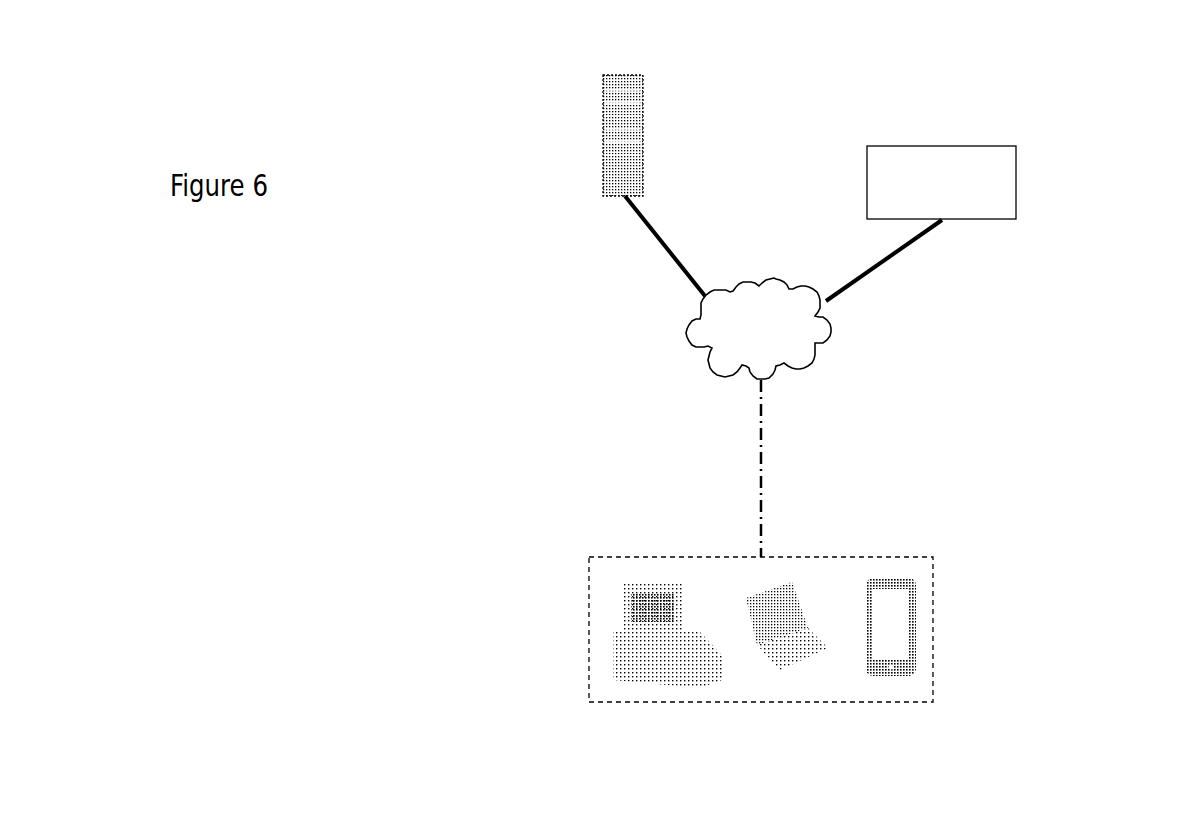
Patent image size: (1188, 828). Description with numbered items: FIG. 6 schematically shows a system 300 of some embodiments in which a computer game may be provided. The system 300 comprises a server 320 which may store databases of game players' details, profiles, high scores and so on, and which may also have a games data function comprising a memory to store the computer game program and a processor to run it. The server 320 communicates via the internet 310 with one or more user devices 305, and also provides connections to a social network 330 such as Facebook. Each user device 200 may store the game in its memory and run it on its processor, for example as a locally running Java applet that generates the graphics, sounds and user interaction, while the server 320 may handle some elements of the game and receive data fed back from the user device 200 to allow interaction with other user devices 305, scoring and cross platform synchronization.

The user device 200 is at (668, 577).
The system 300 is at (1030, 104).
The user devices 305 is at (938, 625).
The internet 310 is at (688, 332).
The server 320 is at (603, 137).
The social network 330 is at (1016, 182).